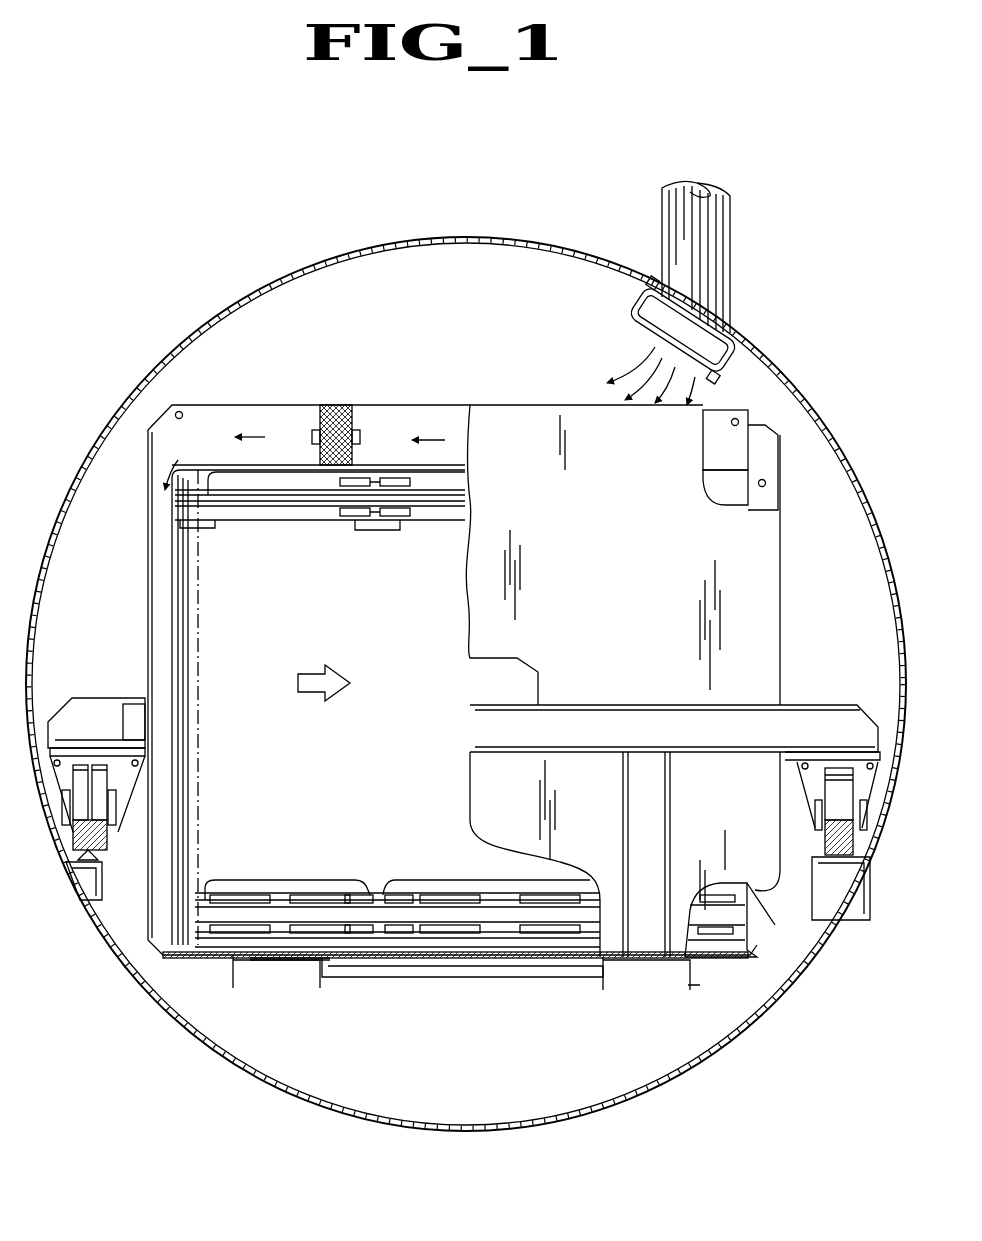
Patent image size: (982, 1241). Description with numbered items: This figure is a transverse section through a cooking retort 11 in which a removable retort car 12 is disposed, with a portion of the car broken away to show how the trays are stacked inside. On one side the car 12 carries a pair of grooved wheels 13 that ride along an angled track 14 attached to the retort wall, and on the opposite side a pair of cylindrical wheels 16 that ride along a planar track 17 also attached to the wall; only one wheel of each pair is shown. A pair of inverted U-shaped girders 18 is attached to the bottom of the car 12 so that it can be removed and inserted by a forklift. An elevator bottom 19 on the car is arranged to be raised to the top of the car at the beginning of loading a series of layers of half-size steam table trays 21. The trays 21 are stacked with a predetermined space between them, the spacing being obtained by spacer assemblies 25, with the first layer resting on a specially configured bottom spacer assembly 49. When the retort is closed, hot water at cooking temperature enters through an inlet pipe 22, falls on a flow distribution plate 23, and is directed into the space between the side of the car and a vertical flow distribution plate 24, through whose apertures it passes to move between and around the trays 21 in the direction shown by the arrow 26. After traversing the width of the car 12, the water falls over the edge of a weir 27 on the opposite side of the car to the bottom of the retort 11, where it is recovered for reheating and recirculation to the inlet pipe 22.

The cooking retort 11 is at (257, 282).
The retort car 12 is at (470, 404).
The grooved wheels 13 is at (76, 857).
The angled track 14 is at (104, 850).
The cylindrical wheels 16 is at (846, 845).
The planar track 17 is at (820, 854).
The inverted U-shaped girders 18 is at (232, 975).
The elevator bottom 19 is at (412, 978).
The steam table trays 21 is at (250, 482).
The inlet pipe 22 is at (732, 255).
The flow distribution plate 23 is at (455, 466).
The vertical flow distribution plate 24 is at (175, 605).
The spacer assemblies 25 is at (398, 475).
The arrow 26 is at (320, 694).
The weir 27 is at (770, 468).
The bottom spacer assembly 49 is at (293, 947).